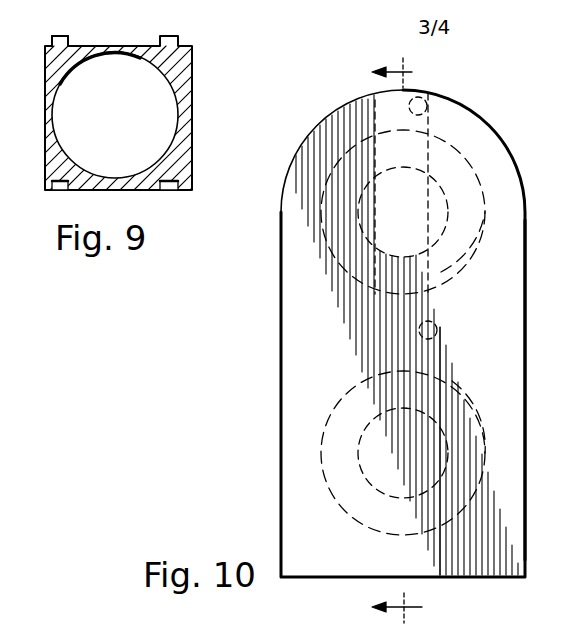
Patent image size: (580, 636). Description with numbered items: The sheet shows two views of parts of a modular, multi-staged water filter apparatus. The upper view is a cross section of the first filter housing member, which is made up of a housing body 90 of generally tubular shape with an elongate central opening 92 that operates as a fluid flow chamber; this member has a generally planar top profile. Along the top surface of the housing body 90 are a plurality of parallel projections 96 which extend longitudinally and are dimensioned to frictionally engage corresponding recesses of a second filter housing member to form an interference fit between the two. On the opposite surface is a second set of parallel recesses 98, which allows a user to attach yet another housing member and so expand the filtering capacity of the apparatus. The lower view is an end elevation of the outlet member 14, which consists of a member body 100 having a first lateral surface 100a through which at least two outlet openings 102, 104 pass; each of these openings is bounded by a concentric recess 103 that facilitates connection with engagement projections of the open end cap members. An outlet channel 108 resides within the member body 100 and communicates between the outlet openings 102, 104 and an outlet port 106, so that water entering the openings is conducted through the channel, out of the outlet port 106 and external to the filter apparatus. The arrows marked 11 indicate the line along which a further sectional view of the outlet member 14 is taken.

In FIG. 9, the housing body 90 is at (183, 154).
In FIG. 9, the elongate central opening 92 is at (135, 125).
In FIG. 9, the plurality of parallel projections 96 is at (64, 34).
In FIG. 9, the second set of plurality of parallel recesses 98 is at (62, 190).
In FIG. 10, the member body 100 is at (281, 403).
In FIG. 10, the first lateral surface 100a is at (512, 560).
In FIG. 10, the outlet opening 102 is at (425, 463).
In FIG. 10, the concentric recess 103 is at (452, 262).
In FIG. 10, the outlet opening 104 is at (425, 219).
In FIG. 10, the outlet port 106 is at (424, 90).
In FIG. 10, the outlet channel 108 is at (437, 328).
In FIG. 10, the outlet member 14 is at (530, 165).
In FIG. 10, the section line 11 is at (409, 340).